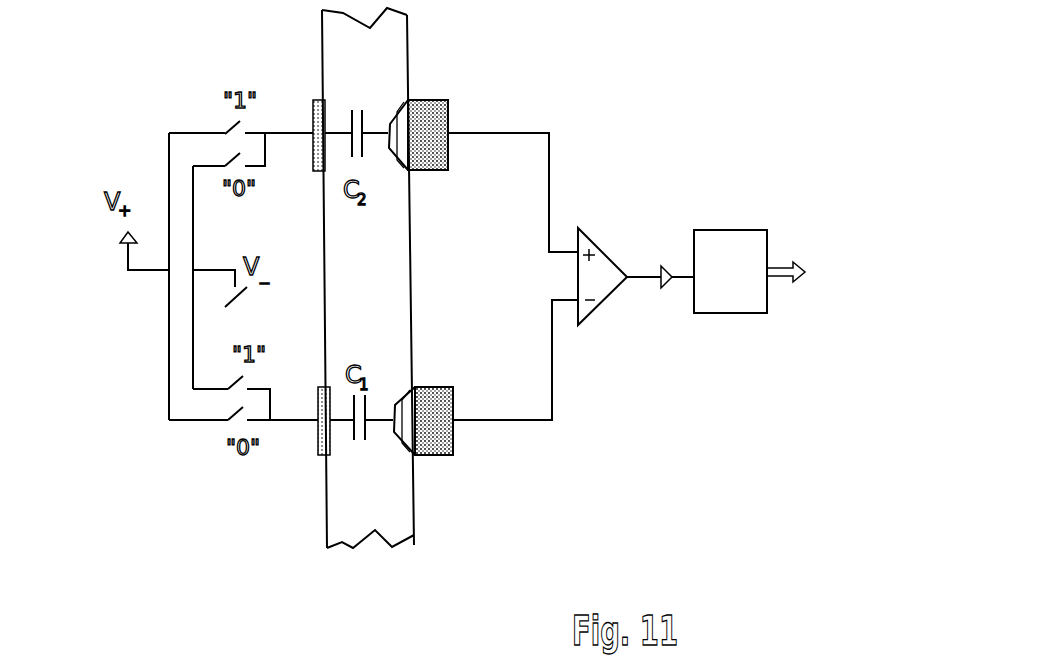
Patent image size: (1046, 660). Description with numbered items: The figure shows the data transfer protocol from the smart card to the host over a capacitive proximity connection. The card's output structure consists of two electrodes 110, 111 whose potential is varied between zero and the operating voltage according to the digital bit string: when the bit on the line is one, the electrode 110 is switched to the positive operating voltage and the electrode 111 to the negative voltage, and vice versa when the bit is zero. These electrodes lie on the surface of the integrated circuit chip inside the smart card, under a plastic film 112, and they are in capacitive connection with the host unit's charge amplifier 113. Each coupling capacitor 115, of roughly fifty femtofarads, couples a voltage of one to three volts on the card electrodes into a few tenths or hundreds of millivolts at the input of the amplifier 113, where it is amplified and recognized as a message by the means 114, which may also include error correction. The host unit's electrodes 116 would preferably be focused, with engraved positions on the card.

The electrode 110 is at (312, 100).
The electrode 111 is at (318, 453).
The plastic film 112 is at (393, 525).
The charge amplifier 113 is at (607, 250).
The means 114 is at (733, 230).
The capacitor 115 is at (378, 132).
The host unit's electrodes 116 is at (448, 103).